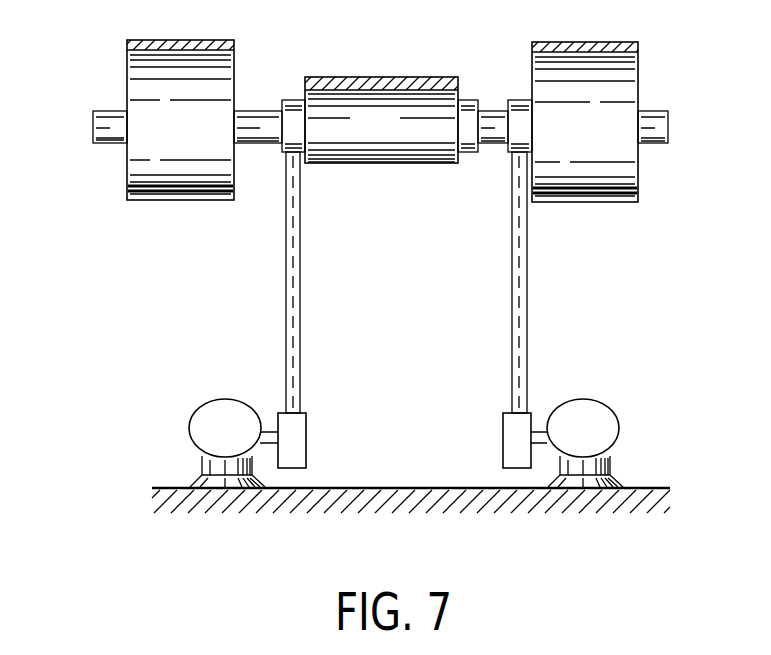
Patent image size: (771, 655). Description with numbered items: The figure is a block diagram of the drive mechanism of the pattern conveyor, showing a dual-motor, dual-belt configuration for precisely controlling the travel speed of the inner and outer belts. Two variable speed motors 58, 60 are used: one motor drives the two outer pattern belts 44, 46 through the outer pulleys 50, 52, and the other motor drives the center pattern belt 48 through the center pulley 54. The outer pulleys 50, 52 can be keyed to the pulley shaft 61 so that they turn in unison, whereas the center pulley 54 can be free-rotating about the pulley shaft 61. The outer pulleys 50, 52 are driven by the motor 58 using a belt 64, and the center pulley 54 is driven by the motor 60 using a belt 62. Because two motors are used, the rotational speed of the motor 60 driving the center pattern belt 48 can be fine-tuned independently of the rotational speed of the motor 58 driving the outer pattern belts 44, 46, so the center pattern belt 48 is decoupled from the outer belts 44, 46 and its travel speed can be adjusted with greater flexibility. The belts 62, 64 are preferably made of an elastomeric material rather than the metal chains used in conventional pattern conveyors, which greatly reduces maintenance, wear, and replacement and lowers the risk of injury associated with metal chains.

The outer pattern belt 44 is at (150, 40).
The outer pattern belt 46 is at (595, 42).
The center pattern belt 48 is at (365, 77).
The outer pulley 50 is at (127, 178).
The outer pulley 52 is at (638, 178).
The center pulley 54 is at (402, 163).
The variable speed motor 58 is at (222, 399).
The variable speed motor 60 is at (600, 400).
The pulley shaft 61 is at (260, 110).
The belt 62 is at (286, 300).
The belt 64 is at (527, 328).